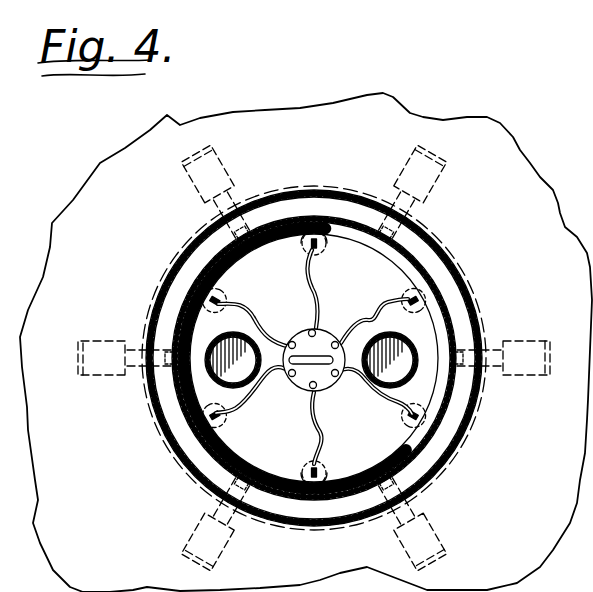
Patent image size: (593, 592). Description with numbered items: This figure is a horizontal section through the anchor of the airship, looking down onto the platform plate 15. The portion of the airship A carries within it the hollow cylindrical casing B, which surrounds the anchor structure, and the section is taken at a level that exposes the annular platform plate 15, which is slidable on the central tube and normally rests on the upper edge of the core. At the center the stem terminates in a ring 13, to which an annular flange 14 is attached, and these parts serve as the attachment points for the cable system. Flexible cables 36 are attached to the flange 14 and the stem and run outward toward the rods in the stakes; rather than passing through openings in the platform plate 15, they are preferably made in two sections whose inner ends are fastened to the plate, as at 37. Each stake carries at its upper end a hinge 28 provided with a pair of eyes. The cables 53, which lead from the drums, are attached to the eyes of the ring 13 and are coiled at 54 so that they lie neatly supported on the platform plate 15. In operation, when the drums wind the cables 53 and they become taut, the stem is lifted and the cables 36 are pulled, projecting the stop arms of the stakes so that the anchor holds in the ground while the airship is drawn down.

The airship portion A is at (306, 342).
The casing B is at (400, 275).
The ring 13 is at (312, 362).
The annular flange 14 is at (322, 337).
The platform plate 15 is at (336, 298).
The hinge 28 is at (415, 297).
The cables 36 is at (263, 298).
The cable fastening 37 is at (298, 246).
The cables 53 is at (405, 297).
The coils 54 is at (213, 380).